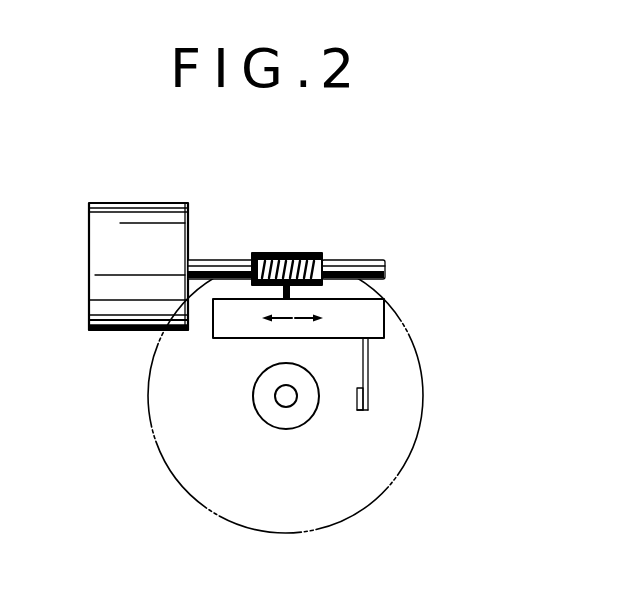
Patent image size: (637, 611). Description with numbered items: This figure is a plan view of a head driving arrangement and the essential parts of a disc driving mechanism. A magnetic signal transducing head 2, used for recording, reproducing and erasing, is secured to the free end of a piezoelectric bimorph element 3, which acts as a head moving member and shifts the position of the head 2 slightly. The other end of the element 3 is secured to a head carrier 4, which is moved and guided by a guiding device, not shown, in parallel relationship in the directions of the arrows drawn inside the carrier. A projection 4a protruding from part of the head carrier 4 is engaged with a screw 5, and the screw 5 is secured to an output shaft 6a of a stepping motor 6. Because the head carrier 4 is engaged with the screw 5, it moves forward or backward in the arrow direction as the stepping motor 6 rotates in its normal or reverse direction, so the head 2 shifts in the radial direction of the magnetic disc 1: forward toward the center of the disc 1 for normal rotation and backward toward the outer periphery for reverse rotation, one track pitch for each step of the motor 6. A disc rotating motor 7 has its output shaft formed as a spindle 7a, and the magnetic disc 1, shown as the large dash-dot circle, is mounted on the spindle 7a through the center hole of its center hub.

The magnetic disc 1 is at (398, 435).
The magnetic signal transducing head 2 is at (357, 397).
The piezoelectric bimorph element 3 is at (368, 370).
The head carrier 4 is at (370, 318).
The projection 4a is at (320, 287).
The screw 5 is at (303, 252).
The stepping motor 6 is at (143, 215).
The output shaft 6a is at (222, 262).
The disc rotating motor 7 is at (265, 408).
The spindle 7a is at (286, 396).